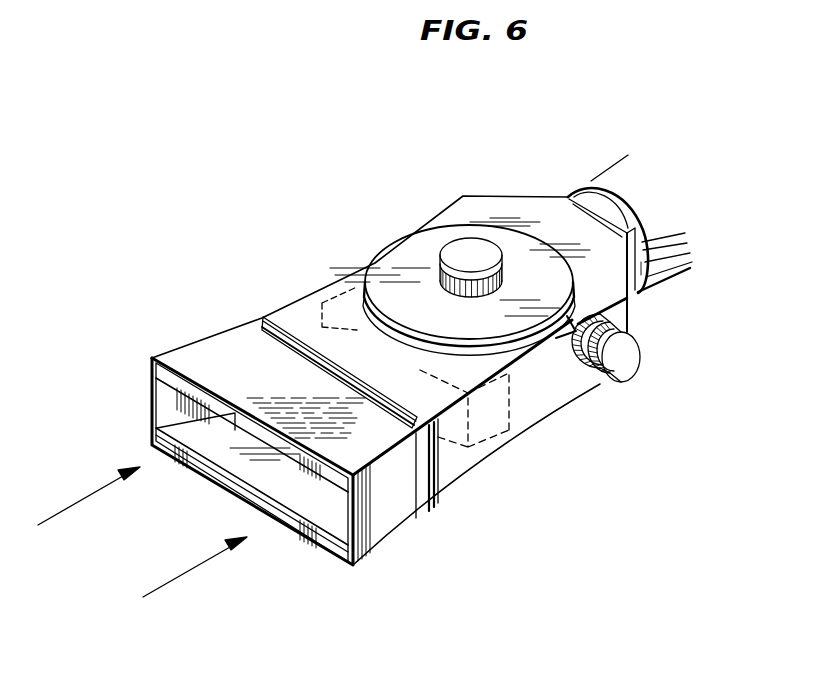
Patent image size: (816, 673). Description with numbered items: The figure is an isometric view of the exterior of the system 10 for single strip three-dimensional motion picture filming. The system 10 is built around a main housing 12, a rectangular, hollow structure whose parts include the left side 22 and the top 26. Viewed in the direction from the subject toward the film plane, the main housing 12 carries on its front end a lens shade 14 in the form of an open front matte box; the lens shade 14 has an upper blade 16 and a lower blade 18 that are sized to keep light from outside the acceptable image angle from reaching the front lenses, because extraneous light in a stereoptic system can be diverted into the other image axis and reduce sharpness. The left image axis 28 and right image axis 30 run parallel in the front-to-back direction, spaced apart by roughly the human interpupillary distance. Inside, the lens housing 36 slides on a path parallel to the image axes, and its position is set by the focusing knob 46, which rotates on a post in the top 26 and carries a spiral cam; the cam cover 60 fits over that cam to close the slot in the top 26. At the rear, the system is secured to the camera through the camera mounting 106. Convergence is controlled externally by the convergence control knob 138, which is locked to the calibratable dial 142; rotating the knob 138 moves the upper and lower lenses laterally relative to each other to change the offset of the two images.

The system 10 is at (326, 246).
The main housing 12 is at (545, 412).
The lens shade 14 is at (383, 528).
The upper blade 16 is at (238, 415).
The lower blade 18 is at (253, 491).
The left side 22 is at (527, 424).
The top 26 is at (316, 306).
The left image axis 28 is at (163, 583).
The right image axis 30 is at (63, 511).
The lens housing 36 is at (477, 440).
The focusing knob 46 is at (462, 247).
The cam cover 60 is at (412, 258).
The camera mounting 106 is at (596, 179).
The convergence control knob 138 is at (640, 347).
The dial 142 is at (632, 313).